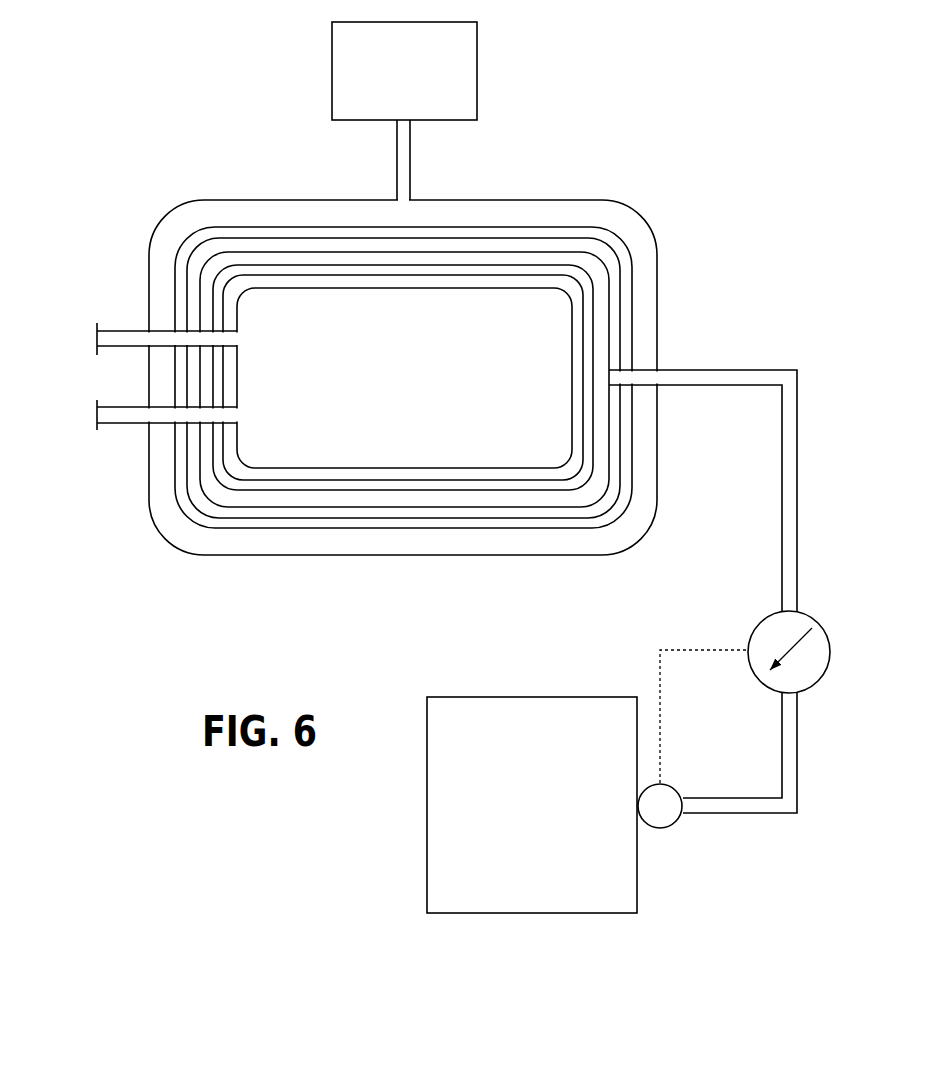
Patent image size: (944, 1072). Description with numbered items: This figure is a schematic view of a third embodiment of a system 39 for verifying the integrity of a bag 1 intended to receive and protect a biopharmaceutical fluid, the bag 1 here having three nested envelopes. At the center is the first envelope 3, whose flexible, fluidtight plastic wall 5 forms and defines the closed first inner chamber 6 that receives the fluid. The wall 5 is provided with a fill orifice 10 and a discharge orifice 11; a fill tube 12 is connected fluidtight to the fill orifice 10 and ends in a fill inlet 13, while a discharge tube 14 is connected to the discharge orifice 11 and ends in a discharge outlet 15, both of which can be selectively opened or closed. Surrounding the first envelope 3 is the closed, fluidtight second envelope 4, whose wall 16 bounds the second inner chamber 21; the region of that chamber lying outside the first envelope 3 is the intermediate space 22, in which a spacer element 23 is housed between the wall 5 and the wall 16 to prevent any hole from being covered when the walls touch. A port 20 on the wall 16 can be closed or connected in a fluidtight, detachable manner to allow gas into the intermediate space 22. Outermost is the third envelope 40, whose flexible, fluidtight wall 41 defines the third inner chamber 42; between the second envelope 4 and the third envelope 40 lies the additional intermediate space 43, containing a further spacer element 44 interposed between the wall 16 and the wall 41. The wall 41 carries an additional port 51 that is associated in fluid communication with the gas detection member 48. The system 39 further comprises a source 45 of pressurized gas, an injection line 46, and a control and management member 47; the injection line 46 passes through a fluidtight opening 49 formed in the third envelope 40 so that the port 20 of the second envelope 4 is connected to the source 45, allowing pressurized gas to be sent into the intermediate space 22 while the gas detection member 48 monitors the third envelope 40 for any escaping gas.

The bag 1 is at (593, 188).
The first envelope 3 is at (598, 352).
The second envelope 4 is at (616, 357).
The wall 5 is at (582, 343).
The first inner chamber 6 is at (571, 330).
The fill orifice 10 is at (241, 338).
The discharge orifice 11 is at (243, 420).
The fill tube 12 is at (120, 338).
The fill inlet 13 is at (97, 332).
The discharge tube 14 is at (120, 418).
The discharge outlet 15 is at (97, 418).
The wall 16 is at (520, 506).
The port 20 is at (613, 378).
The second inner chamber 21 is at (587, 498).
The intermediate space 22 is at (236, 498).
The spacer element 23 is at (527, 332).
The system 39 is at (568, 98).
The third envelope 40 is at (353, 555).
The wall 41 is at (289, 555).
The third inner chamber 42 is at (190, 523).
The additional intermediate space 43 is at (403, 541).
The spacer element 44 is at (470, 521).
The source of pressurized gas 45 is at (587, 781).
The injection line 46 is at (790, 525).
The control and management member 47 is at (802, 670).
The gas detection member 48 is at (458, 42).
The fluidtight opening 49 is at (698, 390).
The additional port 51 is at (403, 172).